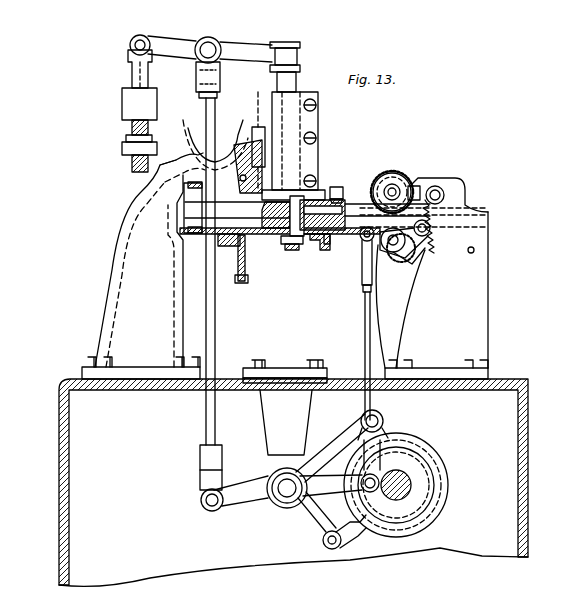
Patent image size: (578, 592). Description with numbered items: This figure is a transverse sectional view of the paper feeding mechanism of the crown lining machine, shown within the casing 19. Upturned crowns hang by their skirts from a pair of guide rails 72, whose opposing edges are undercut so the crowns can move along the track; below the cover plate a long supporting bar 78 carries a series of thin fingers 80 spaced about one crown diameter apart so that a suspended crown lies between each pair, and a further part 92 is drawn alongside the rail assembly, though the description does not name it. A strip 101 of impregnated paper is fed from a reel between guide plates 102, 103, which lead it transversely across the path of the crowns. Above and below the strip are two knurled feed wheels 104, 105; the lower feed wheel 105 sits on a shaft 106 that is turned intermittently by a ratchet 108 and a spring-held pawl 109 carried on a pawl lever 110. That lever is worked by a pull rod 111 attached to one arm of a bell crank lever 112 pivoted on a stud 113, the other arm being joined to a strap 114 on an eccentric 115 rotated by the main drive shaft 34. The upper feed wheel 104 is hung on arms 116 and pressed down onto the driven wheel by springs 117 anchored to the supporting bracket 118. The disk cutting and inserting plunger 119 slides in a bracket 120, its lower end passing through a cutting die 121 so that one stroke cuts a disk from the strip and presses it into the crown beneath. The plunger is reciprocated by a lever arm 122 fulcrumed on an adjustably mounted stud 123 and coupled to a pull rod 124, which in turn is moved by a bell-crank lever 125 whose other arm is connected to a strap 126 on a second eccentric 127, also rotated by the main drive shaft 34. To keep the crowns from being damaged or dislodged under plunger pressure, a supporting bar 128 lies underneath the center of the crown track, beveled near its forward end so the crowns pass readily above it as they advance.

The casing 19 is at (528, 437).
The main drive shaft 34 is at (410, 480).
The guide rails 72 is at (307, 240).
The supporting bar 78 is at (240, 283).
The fingers 80 is at (232, 246).
The collar 92 is at (318, 250).
The strip 101 is at (500, 232).
The guide plate 102 is at (318, 195).
The guide plate 103 is at (334, 230).
The upper feed wheel 104 is at (398, 180).
The lower feed wheel 105 is at (395, 254).
The shaft 106 is at (398, 262).
The ratchet 108 is at (358, 290).
The pawl 109 is at (417, 238).
The pawl lever 110 is at (418, 262).
The pull rod 111 is at (364, 334).
The bell crank lever 112 is at (320, 497).
The stud 113 is at (283, 504).
The strap 114 is at (352, 536).
The eccentric 115 is at (436, 490).
The arms 116 is at (430, 192).
The springs 117 is at (455, 226).
The supporting bracket 118 is at (489, 268).
The disk cutting and inserting plunger 119 is at (272, 210).
The bracket 120 is at (319, 128).
The cutting die 121 is at (262, 240).
The lever arm 122 is at (258, 54).
The stud 123 is at (130, 77).
The pull rod 124 is at (214, 356).
The bell-crank lever 125 is at (242, 512).
The strap 126 is at (392, 433).
The eccentric 127 is at (425, 505).
The supporting bar 128 is at (292, 250).